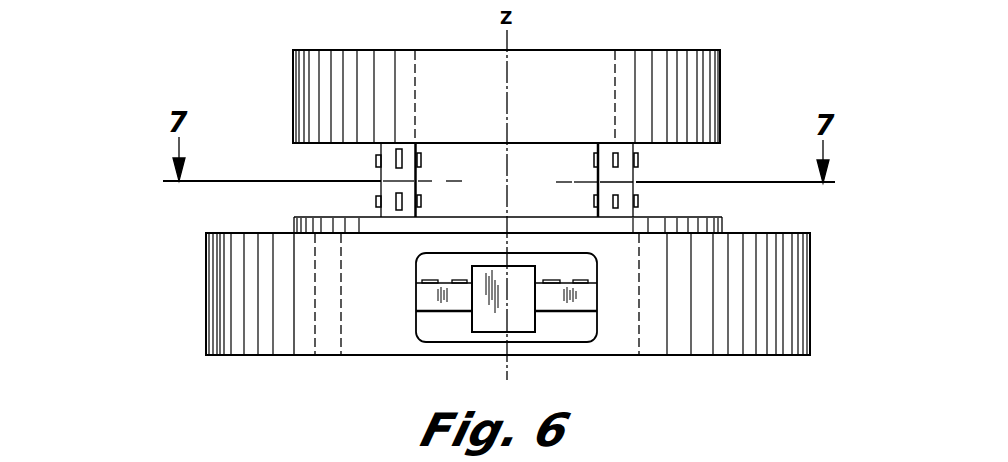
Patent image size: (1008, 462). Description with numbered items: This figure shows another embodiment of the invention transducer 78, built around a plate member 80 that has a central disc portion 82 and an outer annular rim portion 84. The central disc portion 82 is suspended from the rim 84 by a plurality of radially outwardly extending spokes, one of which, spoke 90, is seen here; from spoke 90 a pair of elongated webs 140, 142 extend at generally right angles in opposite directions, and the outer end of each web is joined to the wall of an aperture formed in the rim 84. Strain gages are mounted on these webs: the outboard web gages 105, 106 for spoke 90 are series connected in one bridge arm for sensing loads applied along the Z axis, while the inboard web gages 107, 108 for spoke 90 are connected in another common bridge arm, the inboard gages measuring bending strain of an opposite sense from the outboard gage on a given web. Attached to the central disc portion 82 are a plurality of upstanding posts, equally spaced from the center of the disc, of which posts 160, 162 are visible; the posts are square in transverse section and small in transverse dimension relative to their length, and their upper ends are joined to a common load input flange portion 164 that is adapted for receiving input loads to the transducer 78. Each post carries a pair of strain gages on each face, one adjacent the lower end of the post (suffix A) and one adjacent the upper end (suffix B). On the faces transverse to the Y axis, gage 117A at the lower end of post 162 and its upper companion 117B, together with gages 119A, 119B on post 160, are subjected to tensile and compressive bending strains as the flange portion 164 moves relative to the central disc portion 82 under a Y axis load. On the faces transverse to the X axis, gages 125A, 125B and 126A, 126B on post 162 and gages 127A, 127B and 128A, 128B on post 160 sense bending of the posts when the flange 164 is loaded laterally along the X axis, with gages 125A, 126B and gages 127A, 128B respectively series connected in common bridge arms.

The transducer 78 is at (752, 97).
The plate member 80 is at (815, 265).
The central disc portion 82 is at (302, 217).
The outer annular rim portion 84 is at (206, 318).
The spoke 90 is at (529, 300).
The outboard web gage 105 is at (420, 283).
The outboard web gage 106 is at (587, 282).
The inboard web gage 107 is at (455, 280).
The inboard web gage 108 is at (547, 280).
The strain gage 117A is at (400, 217).
The strain gage 117B is at (400, 143).
The strain gage 119A is at (615, 217).
The strain gage 119B is at (612, 148).
The strain gage 125A is at (421, 201).
The strain gage 125B is at (421, 159).
The strain gage 126A is at (376, 201).
The strain gage 126B is at (376, 159).
The strain gage 127A is at (638, 201).
The strain gage 127B is at (638, 160).
The strain gage 128A is at (594, 201).
The strain gage 128B is at (594, 160).
The web 140 is at (585, 313).
The web 142 is at (433, 313).
The upstanding post 160 is at (636, 178).
The upstanding post 162 is at (380, 178).
The common load input flange portion 164 is at (722, 73).